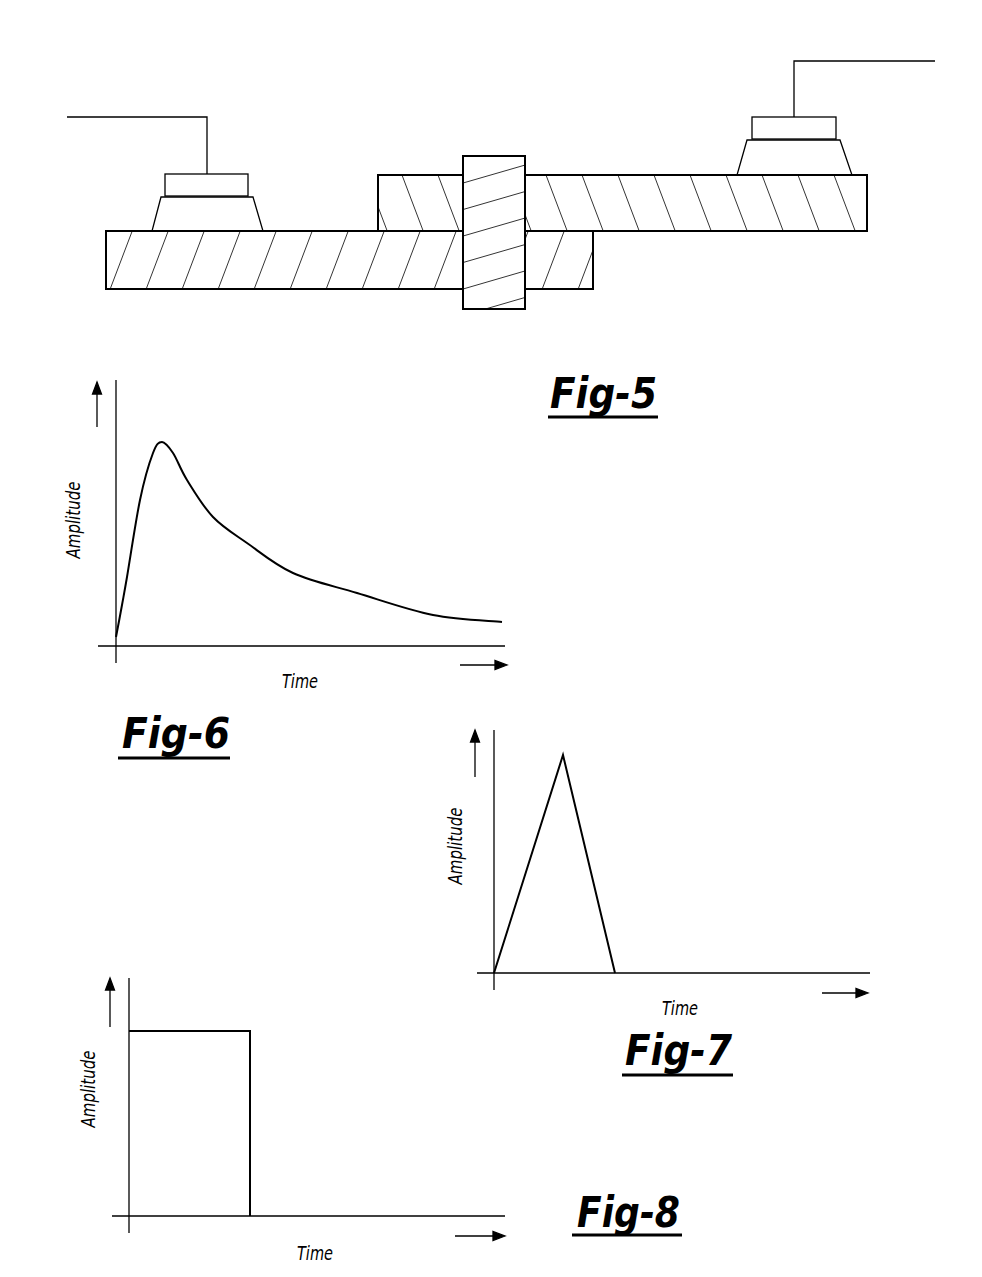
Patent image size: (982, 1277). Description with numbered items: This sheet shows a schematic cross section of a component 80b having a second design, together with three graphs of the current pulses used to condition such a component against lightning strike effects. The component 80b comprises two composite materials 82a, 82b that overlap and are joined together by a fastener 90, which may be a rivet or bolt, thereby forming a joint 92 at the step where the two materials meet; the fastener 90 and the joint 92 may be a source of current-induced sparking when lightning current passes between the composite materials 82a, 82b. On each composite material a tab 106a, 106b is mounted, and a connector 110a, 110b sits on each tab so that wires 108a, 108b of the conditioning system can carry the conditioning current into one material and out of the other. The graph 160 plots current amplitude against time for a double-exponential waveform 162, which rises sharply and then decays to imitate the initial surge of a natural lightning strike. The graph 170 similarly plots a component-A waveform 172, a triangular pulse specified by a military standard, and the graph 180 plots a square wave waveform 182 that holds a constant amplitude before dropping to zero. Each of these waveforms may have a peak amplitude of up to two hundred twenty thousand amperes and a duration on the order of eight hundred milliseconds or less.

In FIG. 5, the component 80b is at (624, 48).
In FIG. 5, the composite material 82a is at (106, 260).
In FIG. 5, the composite material 82b is at (867, 205).
In FIG. 5, the fastener 90 is at (495, 156).
In FIG. 5, the joint 92 is at (603, 243).
In FIG. 5, the tab 106a is at (153, 213).
In FIG. 5, the tab 106b is at (738, 157).
In FIG. 5, the wire 108a is at (138, 117).
In FIG. 5, the wire 108b is at (862, 61).
In FIG. 5, the connector 110a is at (228, 173).
In FIG. 5, the connector 110b is at (838, 128).
In FIG. 6, the graph 160 is at (333, 411).
In FIG. 6, the double-exponential waveform 162 is at (247, 545).
In FIG. 7, the graph 170 is at (712, 735).
In FIG. 7, the component-A waveform 172 is at (594, 872).
In FIG. 8, the graph 180 is at (361, 1037).
In FIG. 8, the square wave waveform 182 is at (252, 1113).